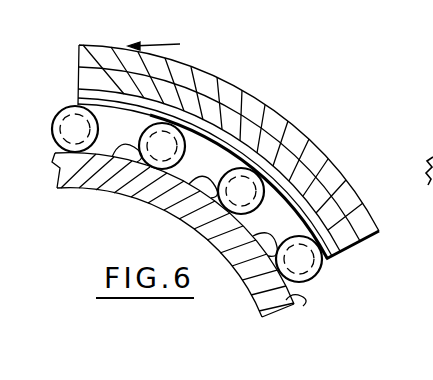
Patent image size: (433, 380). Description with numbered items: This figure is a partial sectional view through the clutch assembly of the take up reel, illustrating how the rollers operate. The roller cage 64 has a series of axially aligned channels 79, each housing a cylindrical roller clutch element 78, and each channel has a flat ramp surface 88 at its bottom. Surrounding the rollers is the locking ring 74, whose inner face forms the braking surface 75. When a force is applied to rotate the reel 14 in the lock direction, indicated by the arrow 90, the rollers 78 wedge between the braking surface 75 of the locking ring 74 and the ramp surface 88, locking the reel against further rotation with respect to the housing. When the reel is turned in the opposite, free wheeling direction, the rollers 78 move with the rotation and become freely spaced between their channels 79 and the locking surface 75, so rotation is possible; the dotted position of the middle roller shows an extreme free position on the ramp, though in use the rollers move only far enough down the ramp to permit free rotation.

The reel 14 is at (196, 73).
The roller cage 64 is at (148, 197).
The locking ring 74 is at (330, 150).
The braking surface 75 is at (302, 190).
The cylindrical roller clutch element 78 is at (283, 200).
The channels 79 is at (250, 218).
The ramp surface 88 is at (198, 215).
The arrow 90 is at (154, 34).